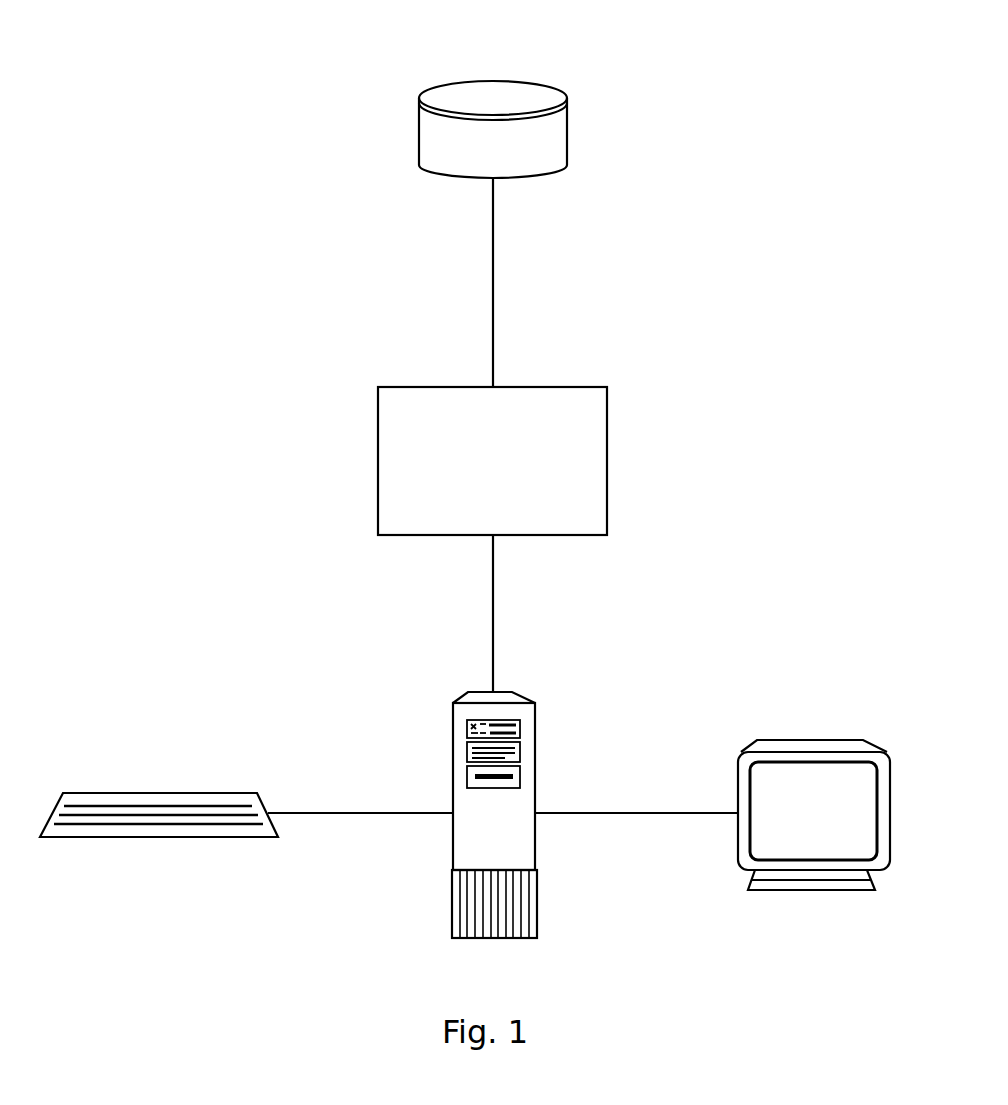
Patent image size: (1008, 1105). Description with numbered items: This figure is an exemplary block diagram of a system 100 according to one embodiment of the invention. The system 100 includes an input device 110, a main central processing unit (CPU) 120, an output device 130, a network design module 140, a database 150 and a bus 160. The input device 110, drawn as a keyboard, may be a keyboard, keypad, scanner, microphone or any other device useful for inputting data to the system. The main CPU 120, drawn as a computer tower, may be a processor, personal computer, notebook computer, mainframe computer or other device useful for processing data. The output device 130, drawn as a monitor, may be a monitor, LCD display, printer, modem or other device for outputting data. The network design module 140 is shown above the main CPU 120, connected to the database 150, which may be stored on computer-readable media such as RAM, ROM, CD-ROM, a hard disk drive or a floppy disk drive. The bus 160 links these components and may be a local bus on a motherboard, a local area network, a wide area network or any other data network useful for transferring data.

The system 100 is at (188, 179).
The input device 110 is at (100, 793).
The main central processing unit (CPU) 120 is at (453, 752).
The output device 130 is at (815, 740).
The network design module 140 is at (607, 387).
The database 150 is at (567, 97).
The bus 160 is at (645, 813).